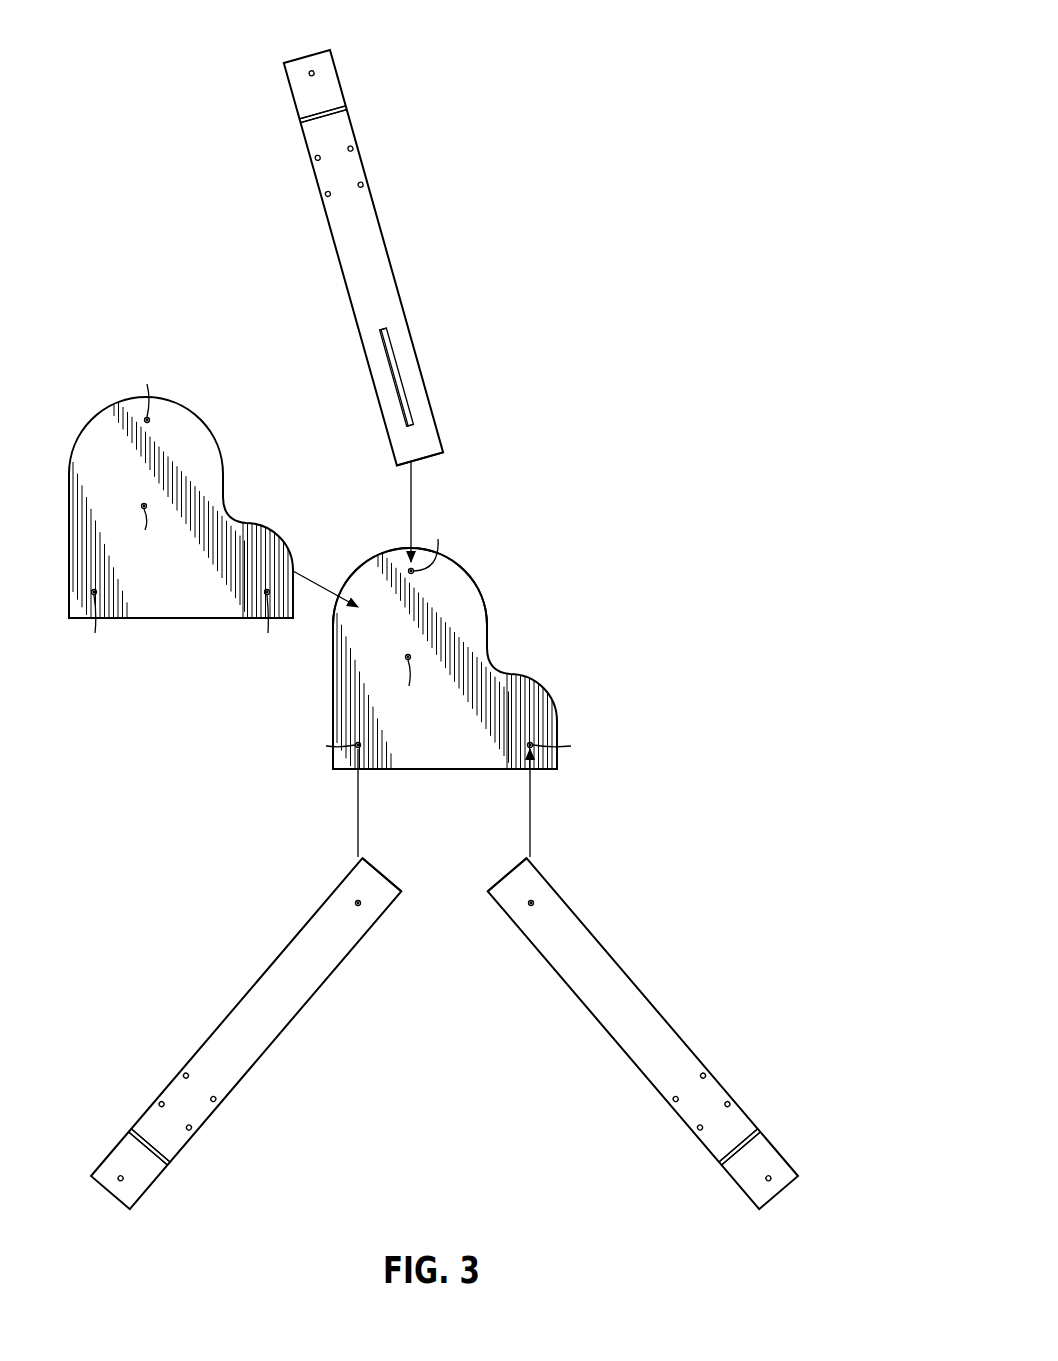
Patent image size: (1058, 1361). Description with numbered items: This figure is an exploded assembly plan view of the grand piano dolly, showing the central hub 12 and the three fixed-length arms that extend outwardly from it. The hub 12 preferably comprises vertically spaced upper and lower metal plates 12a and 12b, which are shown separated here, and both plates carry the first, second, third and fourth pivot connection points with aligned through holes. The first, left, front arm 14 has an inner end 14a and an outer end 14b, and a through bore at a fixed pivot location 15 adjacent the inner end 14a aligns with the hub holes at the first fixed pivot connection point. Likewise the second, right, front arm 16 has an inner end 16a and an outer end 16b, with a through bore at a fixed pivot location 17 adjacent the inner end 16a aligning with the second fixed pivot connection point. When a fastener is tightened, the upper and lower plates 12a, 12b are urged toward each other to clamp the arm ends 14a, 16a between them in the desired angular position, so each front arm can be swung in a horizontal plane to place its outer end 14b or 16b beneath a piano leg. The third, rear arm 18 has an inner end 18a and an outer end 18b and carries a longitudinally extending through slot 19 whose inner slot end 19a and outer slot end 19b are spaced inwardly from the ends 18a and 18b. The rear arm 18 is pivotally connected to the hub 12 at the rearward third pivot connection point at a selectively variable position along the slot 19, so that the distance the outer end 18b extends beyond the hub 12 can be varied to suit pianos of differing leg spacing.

The central hub 12 is at (520, 603).
The upper hub plate 12a is at (91, 420).
The lower hub plate 12b is at (369, 560).
The first, left, front arm 14 is at (221, 1021).
The inner end of left front arm 14a is at (384, 872).
The outer end of left front arm 14b is at (129, 1130).
The fixed pivot location 15 is at (358, 907).
The second, right, front arm 16 is at (668, 1021).
The inner end of right front arm 16a is at (506, 872).
The outer end of right front arm 16b is at (758, 1129).
The fixed pivot location 17 is at (531, 907).
The third, rear arm 18 is at (383, 232).
The inner end of rear arm 18a is at (438, 456).
The outer end of rear arm 18b is at (346, 108).
The through slot 19 is at (399, 372).
The inner slot end 19a is at (413, 425).
The outer slot end 19b is at (404, 323).